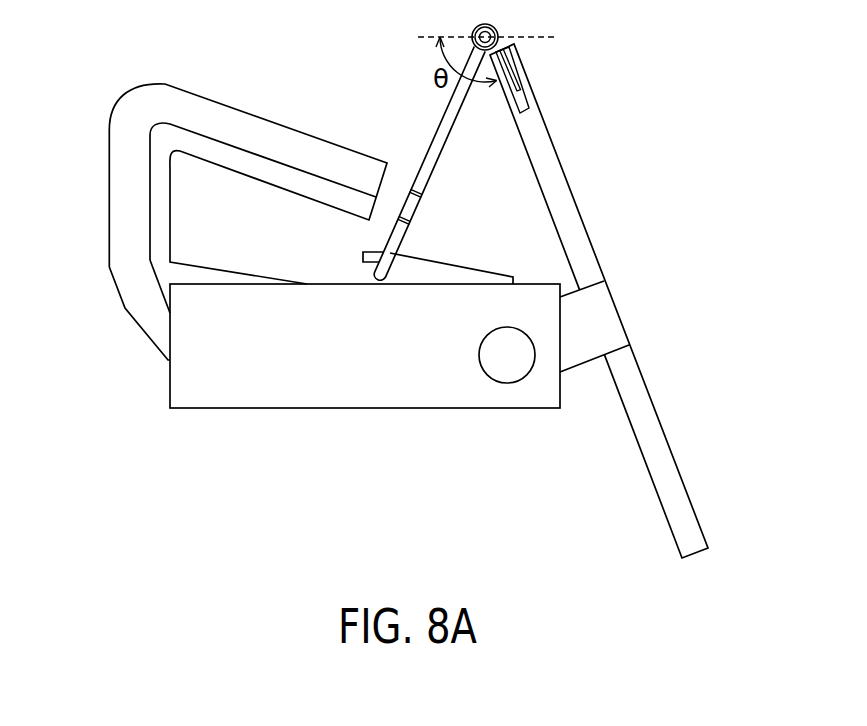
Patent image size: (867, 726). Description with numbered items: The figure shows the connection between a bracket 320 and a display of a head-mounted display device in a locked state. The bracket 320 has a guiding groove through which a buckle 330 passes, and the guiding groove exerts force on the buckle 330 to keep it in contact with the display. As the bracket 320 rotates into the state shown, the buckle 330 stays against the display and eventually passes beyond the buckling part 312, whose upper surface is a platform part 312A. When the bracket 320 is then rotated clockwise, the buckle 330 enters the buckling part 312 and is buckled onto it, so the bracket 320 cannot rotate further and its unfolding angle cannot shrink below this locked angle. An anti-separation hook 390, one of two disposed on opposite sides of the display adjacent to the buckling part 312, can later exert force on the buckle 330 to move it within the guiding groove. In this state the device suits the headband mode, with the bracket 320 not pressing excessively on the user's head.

The anti-separation hook 390 is at (227, 120).
The buckle 330 is at (452, 115).
The bracket 320 is at (563, 202).
The buckling part 312 is at (362, 271).
The platform part 312A is at (448, 265).